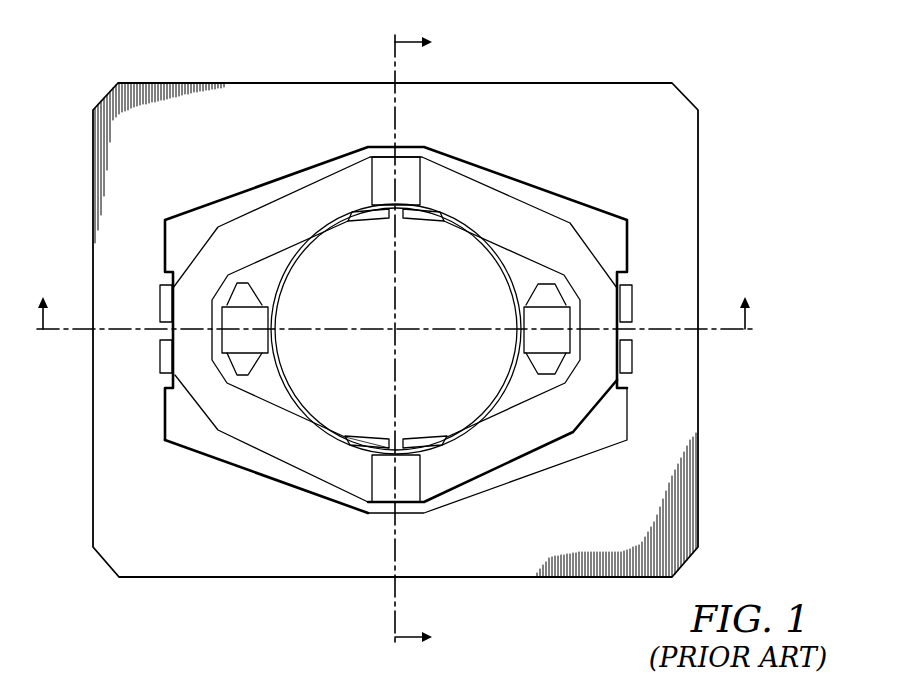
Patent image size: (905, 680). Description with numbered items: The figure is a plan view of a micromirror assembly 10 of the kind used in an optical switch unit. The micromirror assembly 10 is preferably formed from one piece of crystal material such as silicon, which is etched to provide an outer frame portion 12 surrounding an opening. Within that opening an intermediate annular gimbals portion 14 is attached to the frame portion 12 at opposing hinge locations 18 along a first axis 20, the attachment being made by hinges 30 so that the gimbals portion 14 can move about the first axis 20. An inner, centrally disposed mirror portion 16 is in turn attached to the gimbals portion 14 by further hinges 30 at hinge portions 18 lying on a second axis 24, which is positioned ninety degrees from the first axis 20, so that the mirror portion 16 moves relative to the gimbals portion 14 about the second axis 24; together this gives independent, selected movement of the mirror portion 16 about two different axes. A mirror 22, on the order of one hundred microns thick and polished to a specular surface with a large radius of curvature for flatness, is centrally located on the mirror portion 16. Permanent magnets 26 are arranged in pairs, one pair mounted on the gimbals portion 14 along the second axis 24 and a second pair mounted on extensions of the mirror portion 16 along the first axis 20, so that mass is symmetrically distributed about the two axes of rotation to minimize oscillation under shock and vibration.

The micromirror assembly 10 is at (278, 58).
The frame portion 12 is at (556, 96).
The intermediate gimbals portion 14 is at (240, 230).
The inner mirror portion 16 is at (297, 256).
The hinge locations 18 is at (362, 213).
The first axis 20 is at (409, 342).
The mirror 22 is at (349, 275).
The second axis 24 is at (381, 402).
The permanent magnets 26 is at (382, 178).
The hinges 30 is at (160, 327).